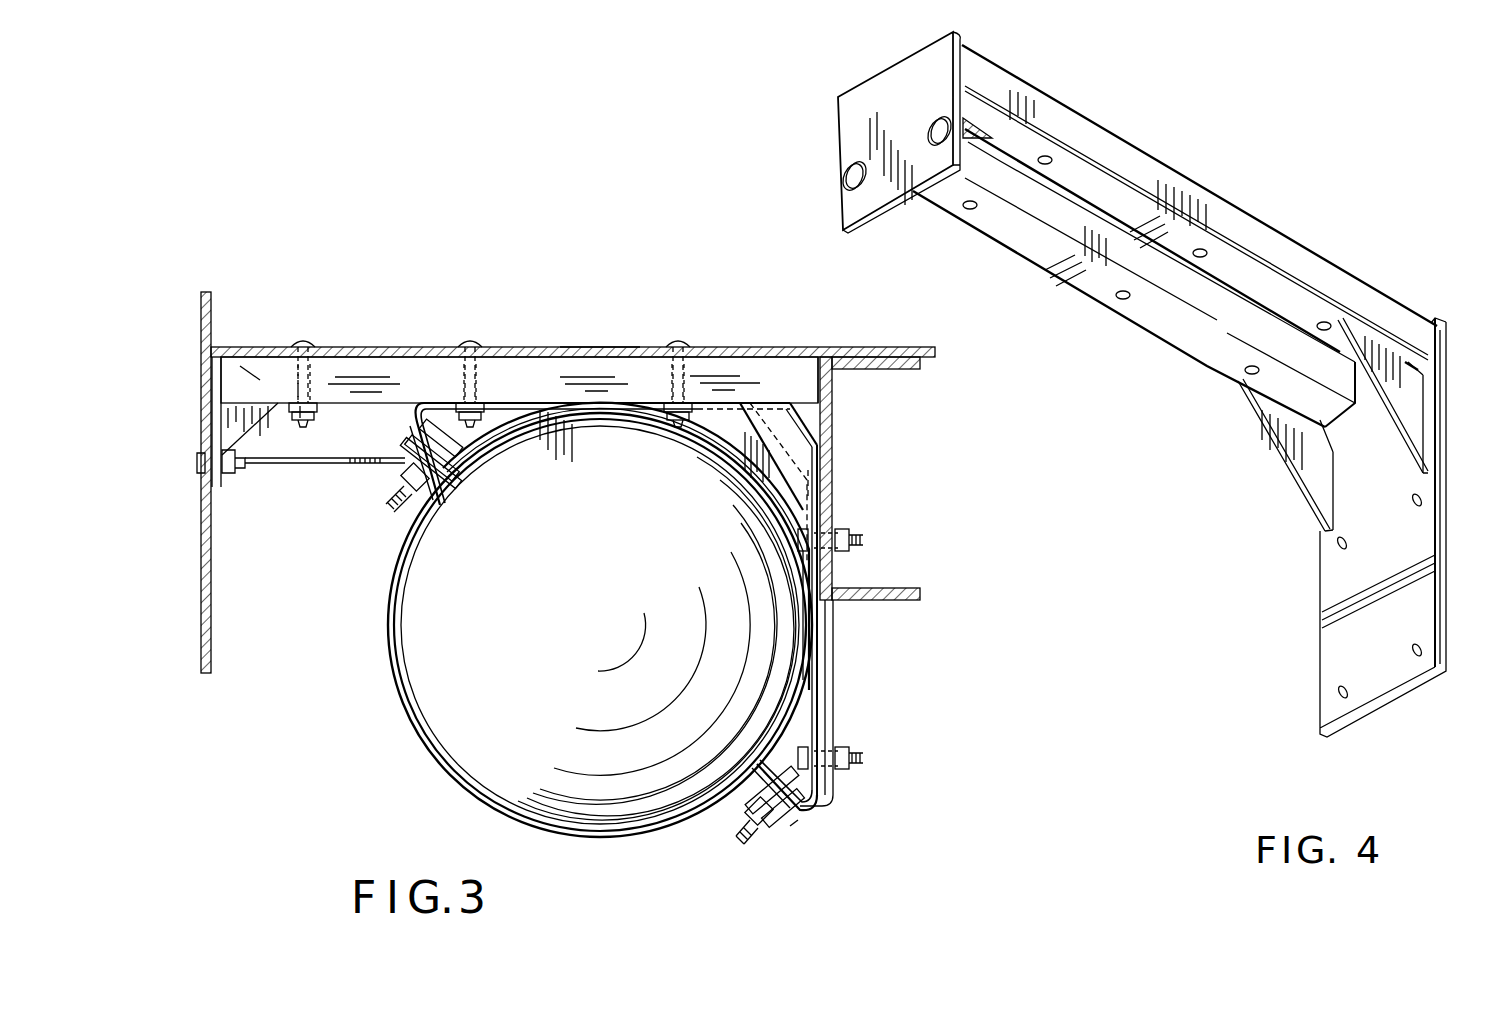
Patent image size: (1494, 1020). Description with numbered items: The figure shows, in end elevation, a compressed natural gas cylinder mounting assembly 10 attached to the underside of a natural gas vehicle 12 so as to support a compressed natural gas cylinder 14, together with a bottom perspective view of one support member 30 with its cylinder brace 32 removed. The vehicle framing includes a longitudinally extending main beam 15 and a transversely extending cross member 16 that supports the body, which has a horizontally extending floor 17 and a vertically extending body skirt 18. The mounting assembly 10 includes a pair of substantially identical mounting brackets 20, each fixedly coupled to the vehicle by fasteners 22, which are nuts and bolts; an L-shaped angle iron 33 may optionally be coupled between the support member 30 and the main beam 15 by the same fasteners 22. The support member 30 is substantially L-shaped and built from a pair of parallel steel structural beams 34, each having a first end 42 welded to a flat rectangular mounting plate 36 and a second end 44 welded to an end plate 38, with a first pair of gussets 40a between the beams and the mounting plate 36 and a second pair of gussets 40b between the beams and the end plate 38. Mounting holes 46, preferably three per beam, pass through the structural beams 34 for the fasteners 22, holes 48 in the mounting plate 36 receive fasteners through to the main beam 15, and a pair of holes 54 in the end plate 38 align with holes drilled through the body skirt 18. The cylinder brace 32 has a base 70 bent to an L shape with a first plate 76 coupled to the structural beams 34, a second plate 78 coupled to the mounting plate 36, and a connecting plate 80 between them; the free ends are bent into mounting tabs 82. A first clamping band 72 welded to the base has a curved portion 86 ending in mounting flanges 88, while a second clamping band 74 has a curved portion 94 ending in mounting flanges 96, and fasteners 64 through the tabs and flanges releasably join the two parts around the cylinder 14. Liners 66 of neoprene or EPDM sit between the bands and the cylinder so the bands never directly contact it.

In FIG. 3, the compressed natural gas cylinder mounting assembly 10 is at (540, 625).
In FIG. 3, the natural gas vehicle 12 is at (764, 346).
In FIG. 3, the compressed natural gas cylinder 14 is at (488, 763).
In FIG. 3, the main beam 15 is at (834, 430).
In FIG. 3, the cross member 16 is at (283, 466).
In FIG. 3, the floor 17 is at (588, 350).
In FIG. 3, the body skirt 18 is at (212, 308).
In FIG. 3, the mounting bracket 20 is at (866, 846).
In FIG. 3, the fasteners 22 is at (304, 342).
In FIG. 3, the support member 30 is at (339, 404).
In FIG. 4, the support member 30 is at (1159, 228).
In FIG. 3, the cylinder brace 32 is at (404, 518).
In FIG. 3, the L-shaped angle iron 33 is at (834, 696).
In FIG. 4, the structural beam 34 is at (1212, 190).
In FIG. 3, the mounting plate 36 is at (824, 792).
In FIG. 4, the mounting plate 36 is at (1320, 598).
In FIG. 3, the end plate 38 is at (226, 480).
In FIG. 4, the end plate 38 is at (842, 132).
In FIG. 3, the first pair of gussets 40a is at (814, 410).
In FIG. 4, the first pair of gussets 40a is at (1390, 422).
In FIG. 3, the second pair of gussets 40b is at (262, 430).
In FIG. 4, the second pair of gussets 40b is at (990, 134).
In FIG. 3, the first end 42 is at (792, 372).
In FIG. 4, the first end 42 is at (1398, 310).
In FIG. 3, the second end 44 is at (252, 380).
In FIG. 4, the second end 44 is at (1032, 98).
In FIG. 3, the mounting holes 46 is at (330, 378).
In FIG. 4, the mounting holes 46 is at (1052, 158).
In FIG. 3, the holes 48 is at (834, 530).
In FIG. 4, the holes 48 is at (1416, 505).
In FIG. 4, the holes 54 is at (845, 182).
In FIG. 3, the fasteners 64 is at (392, 490).
In FIG. 3, the liners 66 is at (394, 664).
In FIG. 3, the base 70 is at (537, 406).
In FIG. 3, the first clamping band 72 is at (650, 424).
In FIG. 3, the second clamping band 74 is at (428, 716).
In FIG. 3, the first plate 76 is at (630, 402).
In FIG. 3, the second plate 78 is at (820, 640).
In FIG. 3, the connecting plate 80 is at (834, 462).
In FIG. 3, the mounting tabs 82 is at (424, 440).
In FIG. 3, the curved portion 86 is at (716, 448).
In FIG. 3, the mounting flanges 88 is at (446, 470).
In FIG. 3, the curved portion 94 is at (519, 812).
In FIG. 3, the mounting flanges 96 is at (452, 474).